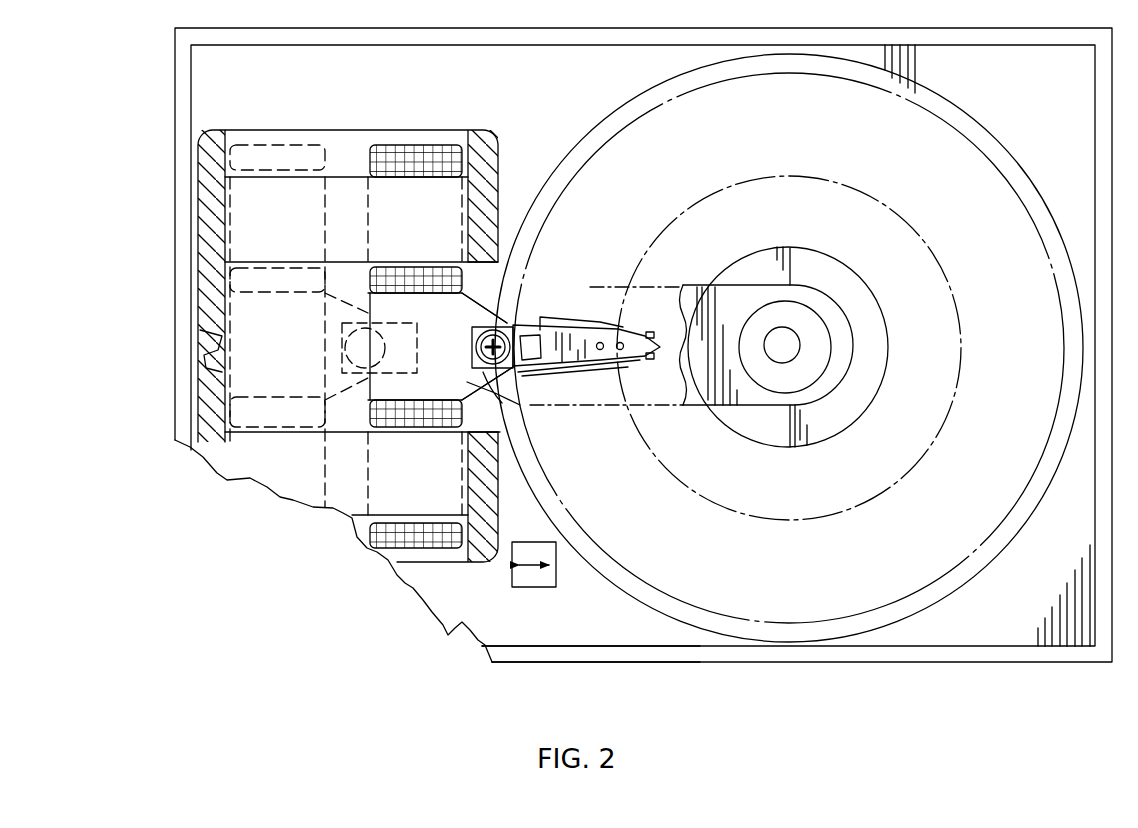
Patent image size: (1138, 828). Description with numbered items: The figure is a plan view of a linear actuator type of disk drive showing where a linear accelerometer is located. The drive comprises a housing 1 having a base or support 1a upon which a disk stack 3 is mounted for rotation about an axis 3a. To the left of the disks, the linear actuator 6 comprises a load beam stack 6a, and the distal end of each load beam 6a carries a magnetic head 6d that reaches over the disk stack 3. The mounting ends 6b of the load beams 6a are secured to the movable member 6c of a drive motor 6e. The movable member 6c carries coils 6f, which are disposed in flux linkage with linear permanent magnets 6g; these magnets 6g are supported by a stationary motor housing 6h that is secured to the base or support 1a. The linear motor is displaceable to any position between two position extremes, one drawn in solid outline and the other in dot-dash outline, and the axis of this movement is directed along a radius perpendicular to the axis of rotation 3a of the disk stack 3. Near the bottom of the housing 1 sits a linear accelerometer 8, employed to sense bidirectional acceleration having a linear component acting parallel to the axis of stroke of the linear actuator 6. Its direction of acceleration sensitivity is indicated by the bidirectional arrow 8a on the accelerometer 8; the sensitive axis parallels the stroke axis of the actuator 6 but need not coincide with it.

The housing 1 is at (408, 598).
The base or support 1a is at (450, 640).
The disk stack 3 is at (650, 606).
The axis of rotation 3a is at (792, 348).
The linear actuator 6 is at (522, 312).
The load beam stack 6a is at (557, 327).
The mounting ends 6b is at (513, 372).
The movable member 6c is at (505, 395).
The magnetic head 6d is at (648, 333).
The drive motor 6e is at (456, 334).
The coils 6f is at (425, 150).
The linear permanent magnets 6g is at (342, 185).
The stationary motor housing 6h is at (498, 160).
The linear accelerometer 8 is at (530, 542).
The bidirectional arrow 8a is at (535, 568).